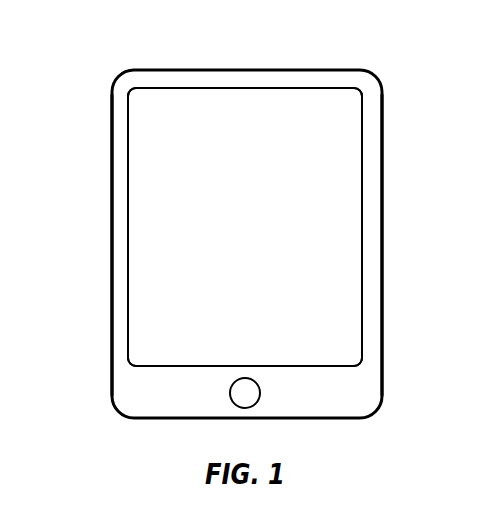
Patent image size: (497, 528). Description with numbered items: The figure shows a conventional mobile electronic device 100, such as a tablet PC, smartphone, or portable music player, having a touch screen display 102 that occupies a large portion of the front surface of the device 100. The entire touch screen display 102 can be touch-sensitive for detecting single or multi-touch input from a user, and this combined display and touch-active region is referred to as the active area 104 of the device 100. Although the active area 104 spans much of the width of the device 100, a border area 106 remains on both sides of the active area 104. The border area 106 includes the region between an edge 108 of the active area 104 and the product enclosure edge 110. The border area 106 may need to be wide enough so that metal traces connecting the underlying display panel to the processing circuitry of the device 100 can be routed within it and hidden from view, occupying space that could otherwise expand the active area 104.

The mobile electronic device 100 is at (333, 48).
The touch screen display 102 is at (364, 177).
The active area 104 is at (342, 240).
The border area 106 is at (370, 270).
The edge of the active area 108 is at (365, 208).
The product enclosure edge 110 is at (384, 143).